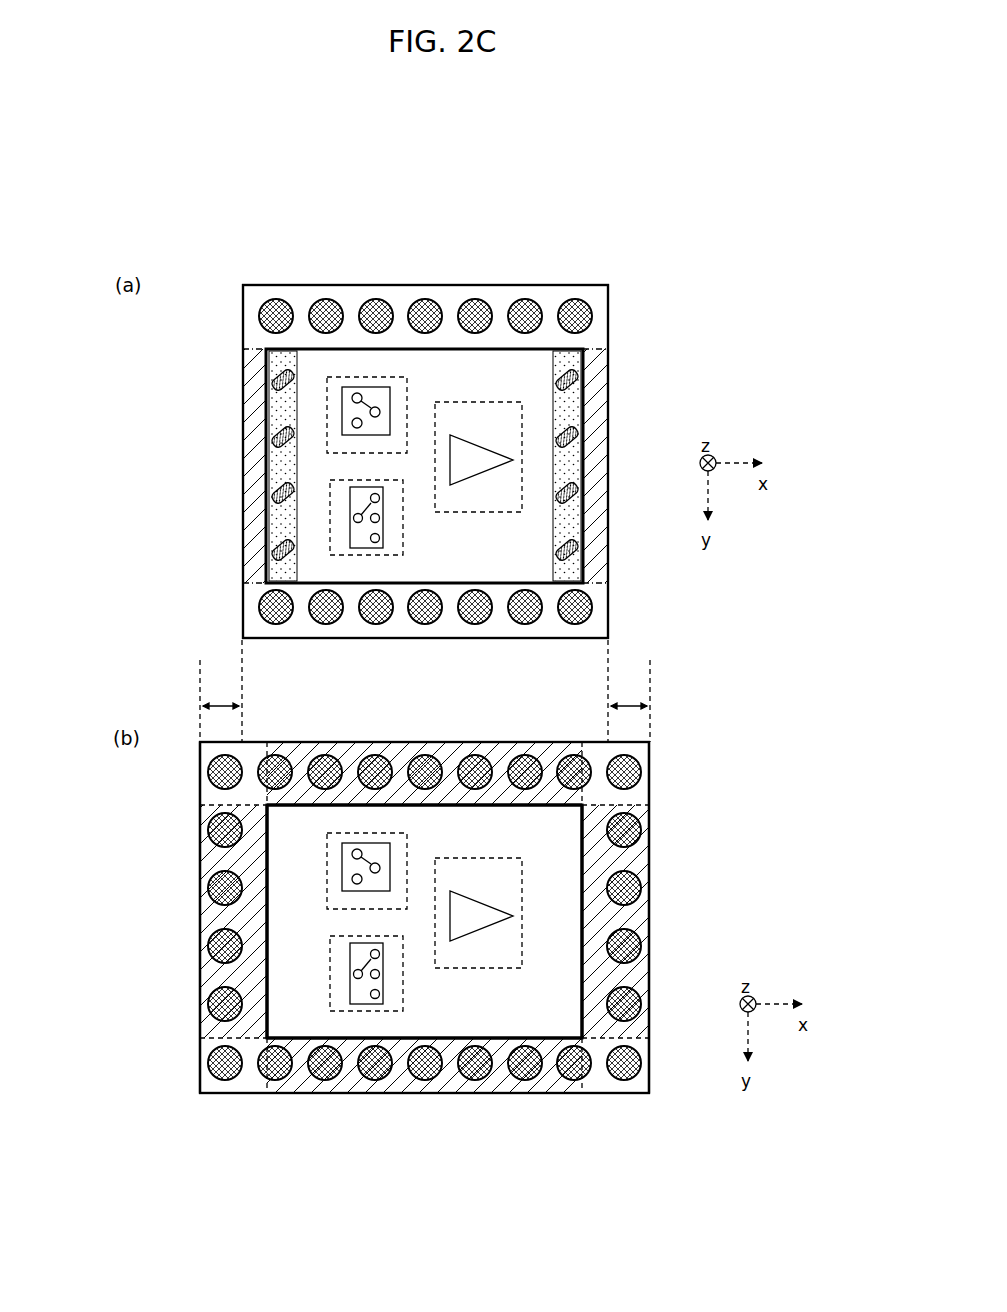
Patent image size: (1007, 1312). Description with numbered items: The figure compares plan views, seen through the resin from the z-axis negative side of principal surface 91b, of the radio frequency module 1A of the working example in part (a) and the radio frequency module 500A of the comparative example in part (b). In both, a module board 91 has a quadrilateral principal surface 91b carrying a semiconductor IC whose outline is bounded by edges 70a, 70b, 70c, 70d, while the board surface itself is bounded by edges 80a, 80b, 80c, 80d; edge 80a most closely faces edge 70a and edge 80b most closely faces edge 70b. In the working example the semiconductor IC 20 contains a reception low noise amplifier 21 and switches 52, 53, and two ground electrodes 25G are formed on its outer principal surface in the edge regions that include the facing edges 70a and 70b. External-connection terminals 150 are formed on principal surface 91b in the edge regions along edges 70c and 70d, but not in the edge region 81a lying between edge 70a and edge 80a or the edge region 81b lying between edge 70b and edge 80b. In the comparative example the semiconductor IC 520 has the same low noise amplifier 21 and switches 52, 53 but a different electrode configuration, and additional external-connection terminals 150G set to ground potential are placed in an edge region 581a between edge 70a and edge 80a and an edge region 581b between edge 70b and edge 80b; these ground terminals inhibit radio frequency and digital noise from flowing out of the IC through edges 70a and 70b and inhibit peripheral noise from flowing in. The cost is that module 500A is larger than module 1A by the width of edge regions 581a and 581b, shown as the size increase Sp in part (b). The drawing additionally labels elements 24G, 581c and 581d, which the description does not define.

The radio frequency module 1A is at (697, 336).
The radio frequency module 500A is at (703, 741).
The semiconductor IC 20 is at (490, 348).
The semiconductor IC 520 is at (490, 805).
The reception low noise amplifier 21 is at (490, 513).
The switch 52 is at (408, 389).
The switch 53 is at (404, 540).
The module board 91 is at (562, 286).
The principal surface 91b is at (598, 326).
The external-connection terminals 150 is at (473, 300).
The external-connection terminals 150G is at (208, 944).
The edge region 81a is at (256, 404).
The edge region 81b is at (598, 385).
The ground electrodes 25G is at (278, 468).
The ground pads 24G is at (278, 553).
The size increase Sp is at (425, 691).
The edge 70a is at (268, 978).
The edge 70b is at (582, 978).
The edge 70c is at (298, 806).
The edge 70d is at (298, 1085).
The edge 80a is at (200, 1020).
The edge 80b is at (649, 1038).
The edge 80c is at (270, 756).
The edge 80d is at (285, 1082).
The edge region 581a is at (213, 915).
The edge region 581b is at (637, 918).
The ground wiring 581c is at (370, 750).
The ground wiring 581d is at (503, 1085).